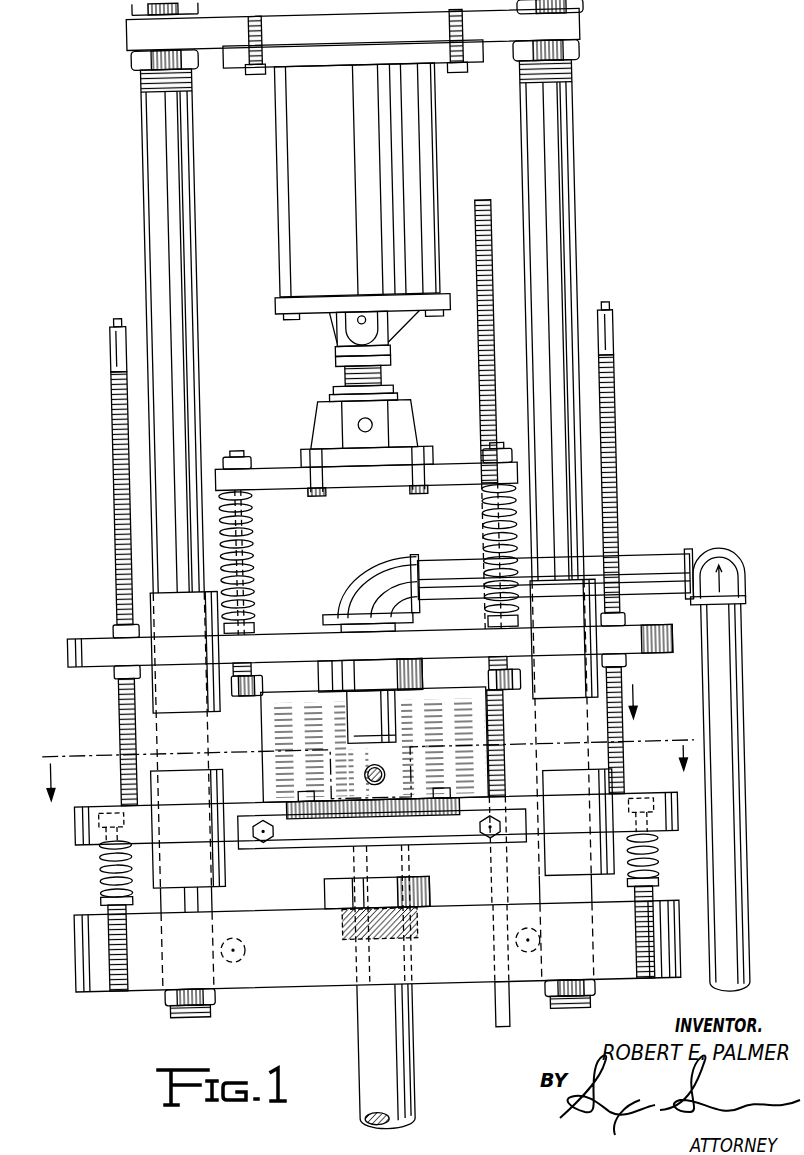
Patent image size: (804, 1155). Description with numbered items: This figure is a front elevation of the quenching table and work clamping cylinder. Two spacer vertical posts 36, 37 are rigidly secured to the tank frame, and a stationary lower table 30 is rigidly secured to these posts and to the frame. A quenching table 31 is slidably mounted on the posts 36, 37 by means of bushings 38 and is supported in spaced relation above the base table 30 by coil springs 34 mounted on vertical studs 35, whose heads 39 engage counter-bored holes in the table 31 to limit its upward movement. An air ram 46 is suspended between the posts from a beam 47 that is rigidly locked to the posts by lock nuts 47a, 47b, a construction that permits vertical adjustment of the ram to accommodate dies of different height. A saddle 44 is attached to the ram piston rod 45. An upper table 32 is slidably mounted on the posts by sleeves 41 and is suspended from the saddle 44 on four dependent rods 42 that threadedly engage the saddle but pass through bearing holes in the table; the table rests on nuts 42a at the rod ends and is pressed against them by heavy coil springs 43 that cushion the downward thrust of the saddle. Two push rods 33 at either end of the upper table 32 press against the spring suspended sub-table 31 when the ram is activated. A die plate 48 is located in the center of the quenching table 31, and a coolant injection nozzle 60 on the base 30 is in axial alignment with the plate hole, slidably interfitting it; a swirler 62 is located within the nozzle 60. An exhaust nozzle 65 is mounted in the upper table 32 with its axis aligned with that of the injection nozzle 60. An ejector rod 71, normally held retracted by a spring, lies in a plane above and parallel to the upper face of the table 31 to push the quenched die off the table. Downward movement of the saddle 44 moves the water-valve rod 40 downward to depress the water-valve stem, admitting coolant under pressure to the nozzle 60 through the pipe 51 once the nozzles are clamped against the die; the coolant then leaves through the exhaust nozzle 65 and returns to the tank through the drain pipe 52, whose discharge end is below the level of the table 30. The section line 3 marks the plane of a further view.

The section line 3- 3 is at (367, 744).
The stationary or lower table 30 is at (252, 987).
The quenching table 31 is at (445, 846).
The upper table 32 is at (66, 640).
The push rods 33 is at (619, 334).
The coil springs 34 is at (98, 864).
The vertical studs 35 is at (84, 824).
The spacer vertical post 36 is at (205, 262).
The spacer vertical post 37 is at (585, 231).
The bushings 38 is at (218, 775).
The stud heads 39 is at (104, 806).
The water-valve rod 40 is at (484, 348).
The sleeves 41 is at (158, 594).
The dependent rods 42 is at (254, 541).
The nuts 42a is at (261, 676).
The heavy coil springs 43 is at (252, 512).
The saddle 44 is at (302, 487).
The ram piston rod 45 is at (386, 373).
The air ram 46 is at (305, 150).
The beam 47 is at (143, 38).
The lock nut 47a is at (146, 14).
The lock nut 47b is at (144, 61).
The die plate 48 is at (294, 848).
The pipe 51 is at (400, 1030).
The drain pipe 52 is at (741, 726).
The coolant injection nozzle 60 is at (397, 856).
The swirler 62 is at (365, 860).
The exhaust nozzle 65 is at (392, 712).
The ejector rod 71 is at (376, 770).